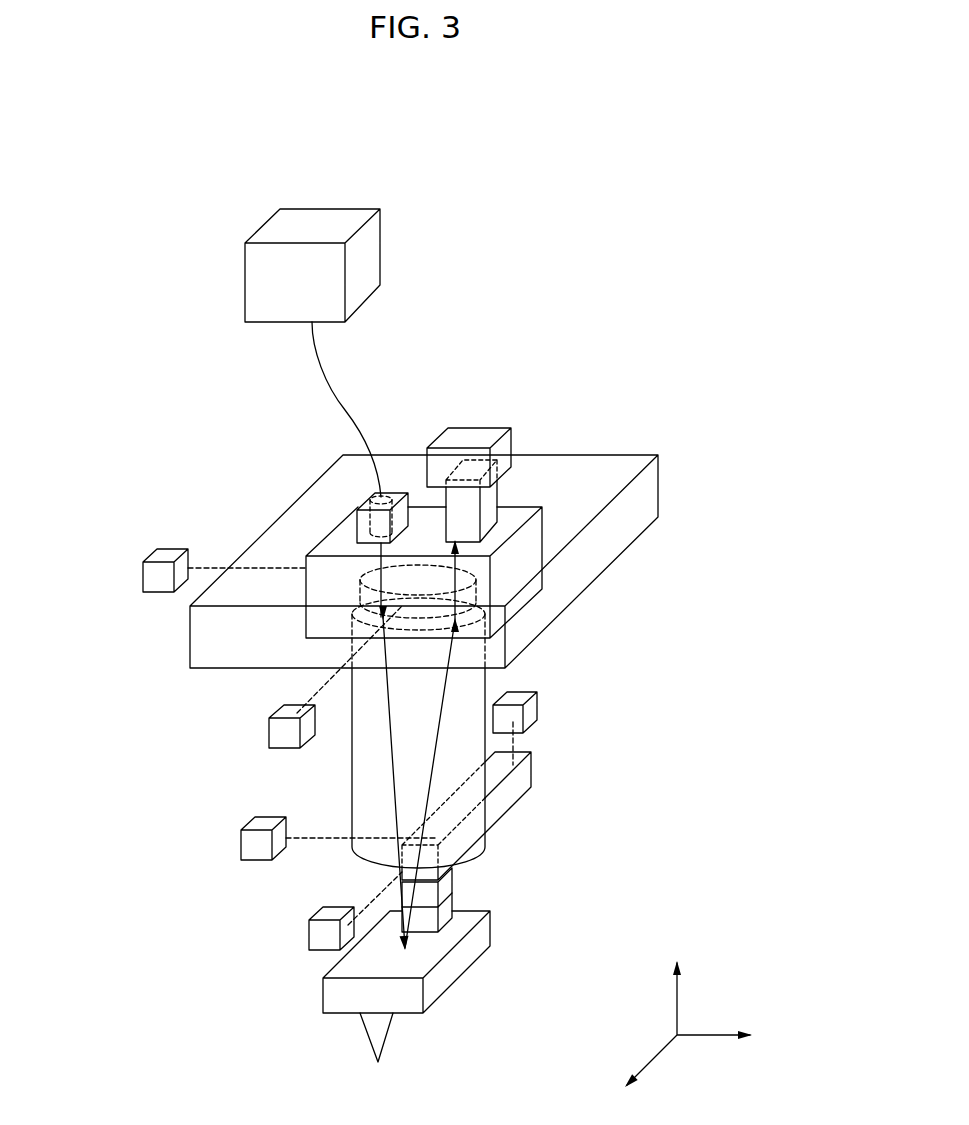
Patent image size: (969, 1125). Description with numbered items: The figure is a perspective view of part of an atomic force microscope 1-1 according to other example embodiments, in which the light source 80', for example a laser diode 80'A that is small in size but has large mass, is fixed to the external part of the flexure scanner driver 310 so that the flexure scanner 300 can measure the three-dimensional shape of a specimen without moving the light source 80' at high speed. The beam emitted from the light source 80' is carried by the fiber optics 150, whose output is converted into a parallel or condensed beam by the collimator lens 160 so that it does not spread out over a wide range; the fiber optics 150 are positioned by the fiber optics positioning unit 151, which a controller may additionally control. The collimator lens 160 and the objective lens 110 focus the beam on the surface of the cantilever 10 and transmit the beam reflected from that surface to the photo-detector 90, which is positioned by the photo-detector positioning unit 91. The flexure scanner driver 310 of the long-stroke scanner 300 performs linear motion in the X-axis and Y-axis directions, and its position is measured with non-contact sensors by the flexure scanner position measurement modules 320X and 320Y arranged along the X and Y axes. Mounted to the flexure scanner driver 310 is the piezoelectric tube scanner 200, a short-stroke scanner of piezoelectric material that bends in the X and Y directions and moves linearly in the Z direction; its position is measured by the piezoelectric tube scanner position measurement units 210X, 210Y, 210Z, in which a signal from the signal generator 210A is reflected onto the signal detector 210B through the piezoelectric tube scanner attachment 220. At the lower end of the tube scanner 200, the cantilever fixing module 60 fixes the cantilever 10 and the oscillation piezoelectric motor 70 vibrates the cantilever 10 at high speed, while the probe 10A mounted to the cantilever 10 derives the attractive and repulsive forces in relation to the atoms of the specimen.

The atomic force microscope 1-1 is at (632, 220).
The light source 80' is at (322, 236).
The laser diode 80'A is at (312, 265).
The fiber optics 150 is at (323, 377).
The fiber optics positioning unit 151 is at (383, 497).
The collimator lens 160 is at (340, 478).
The objective lens 110 is at (365, 573).
The photo-detector positioning unit 91 is at (472, 432).
The photo-detector 90 is at (497, 500).
The long-stroke scanner 300 is at (666, 487).
The flexure scanner driver 310 is at (538, 538).
The flexure scanner position measurement module 320Y is at (143, 578).
The flexure scanner position measurement module 320X is at (269, 732).
The piezoelectric tube scanner 200 is at (487, 815).
The piezoelectric tube scanner attachment 220 is at (525, 778).
The piezoelectric tube scanner position measurement unit 210Z is at (537, 710).
The piezoelectric tube scanner position measurement unit 210Y is at (297, 817).
The piezoelectric tube scanner position measurement unit 210X is at (309, 935).
The signal generator 210A is at (287, 817).
The signal detector 210B is at (283, 832).
The oscillation piezoelectric motor 70 is at (440, 884).
The cantilever fixing module 60 is at (440, 908).
The cantilever 10 is at (376, 992).
The probe 10A is at (365, 1045).